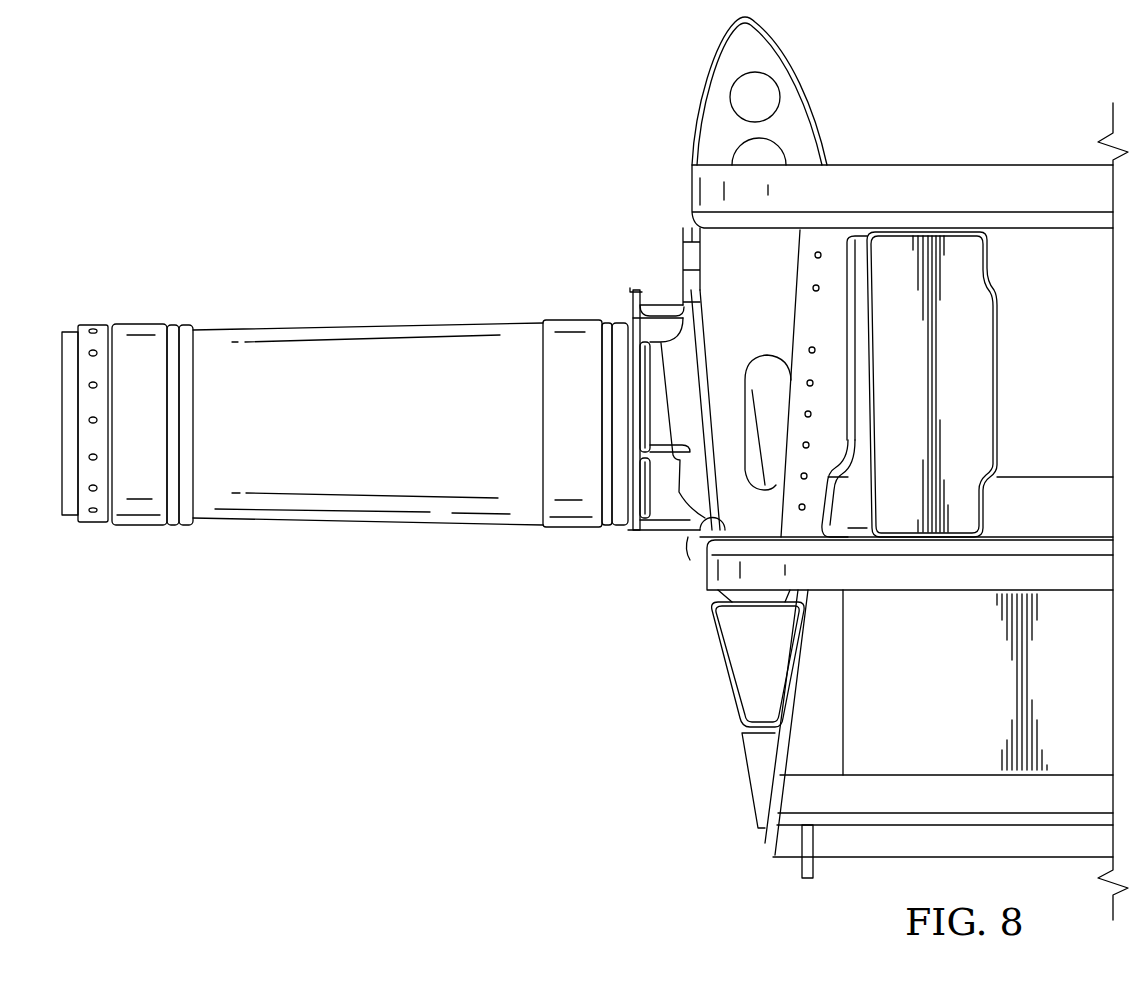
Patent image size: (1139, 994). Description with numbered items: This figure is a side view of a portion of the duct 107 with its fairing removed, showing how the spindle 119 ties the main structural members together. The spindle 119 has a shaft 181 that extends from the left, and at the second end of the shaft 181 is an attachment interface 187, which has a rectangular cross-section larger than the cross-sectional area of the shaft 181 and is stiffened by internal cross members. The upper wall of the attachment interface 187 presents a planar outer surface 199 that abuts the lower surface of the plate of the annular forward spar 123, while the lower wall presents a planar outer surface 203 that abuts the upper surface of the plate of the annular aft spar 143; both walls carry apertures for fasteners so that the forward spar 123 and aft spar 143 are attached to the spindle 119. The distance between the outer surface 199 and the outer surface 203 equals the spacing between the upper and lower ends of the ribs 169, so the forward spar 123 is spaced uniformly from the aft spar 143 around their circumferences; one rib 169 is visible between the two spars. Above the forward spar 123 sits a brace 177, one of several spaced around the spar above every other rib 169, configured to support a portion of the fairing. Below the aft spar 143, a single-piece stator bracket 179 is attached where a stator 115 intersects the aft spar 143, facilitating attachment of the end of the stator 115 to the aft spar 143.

The duct 107 is at (448, 188).
The brace 177 is at (798, 62).
The forward spar 123 is at (692, 193).
The attachment interface 187 is at (707, 300).
The planar outer surface 199 is at (760, 235).
The rib 169 is at (1000, 320).
The spindle 119 is at (240, 518).
The shaft 181 is at (444, 516).
The planar outer surface 203 is at (700, 535).
The aft spar 143 is at (715, 570).
The stator bracket 179 is at (730, 688).
The stator 115 is at (870, 860).